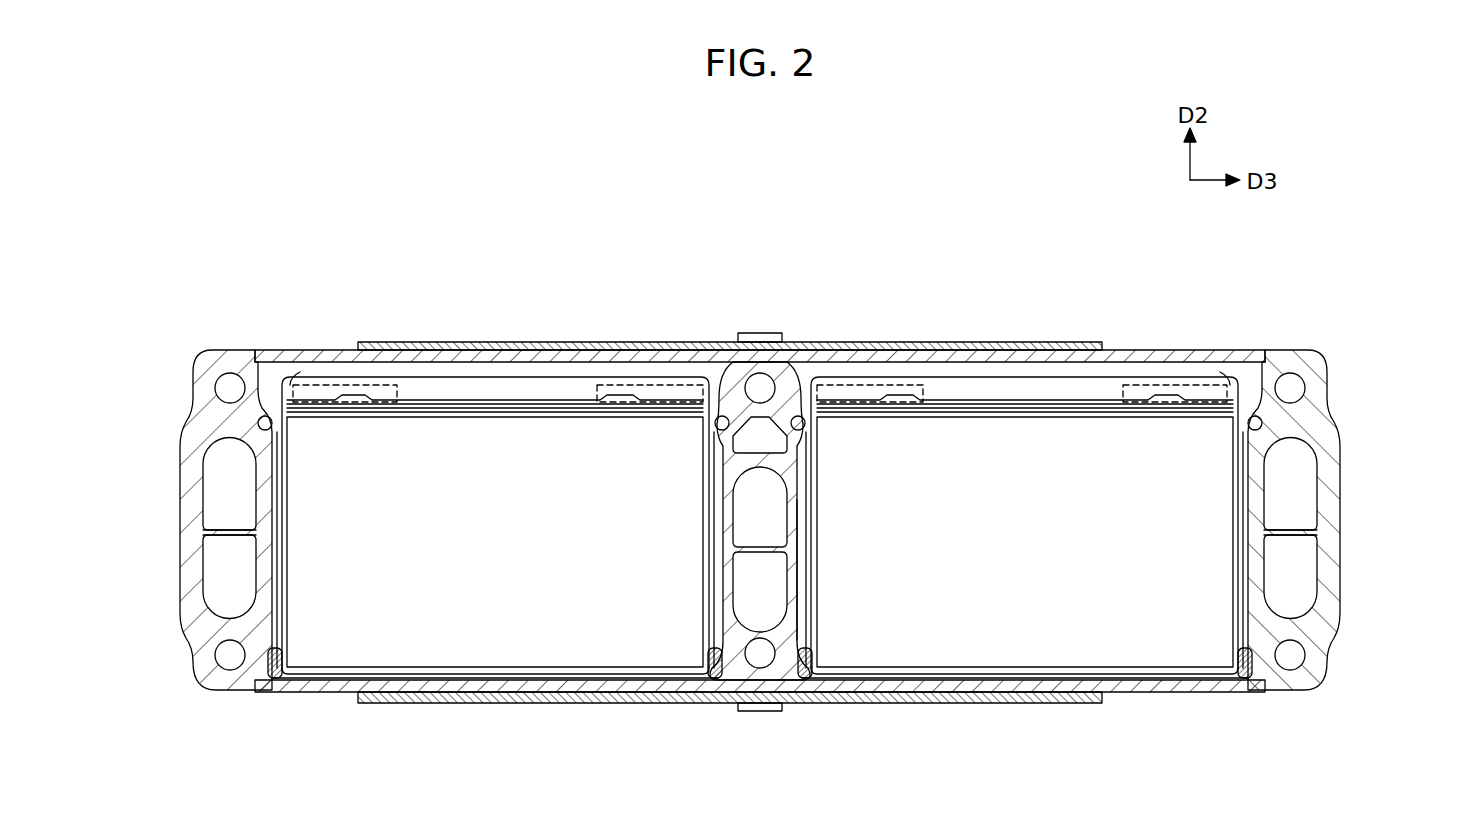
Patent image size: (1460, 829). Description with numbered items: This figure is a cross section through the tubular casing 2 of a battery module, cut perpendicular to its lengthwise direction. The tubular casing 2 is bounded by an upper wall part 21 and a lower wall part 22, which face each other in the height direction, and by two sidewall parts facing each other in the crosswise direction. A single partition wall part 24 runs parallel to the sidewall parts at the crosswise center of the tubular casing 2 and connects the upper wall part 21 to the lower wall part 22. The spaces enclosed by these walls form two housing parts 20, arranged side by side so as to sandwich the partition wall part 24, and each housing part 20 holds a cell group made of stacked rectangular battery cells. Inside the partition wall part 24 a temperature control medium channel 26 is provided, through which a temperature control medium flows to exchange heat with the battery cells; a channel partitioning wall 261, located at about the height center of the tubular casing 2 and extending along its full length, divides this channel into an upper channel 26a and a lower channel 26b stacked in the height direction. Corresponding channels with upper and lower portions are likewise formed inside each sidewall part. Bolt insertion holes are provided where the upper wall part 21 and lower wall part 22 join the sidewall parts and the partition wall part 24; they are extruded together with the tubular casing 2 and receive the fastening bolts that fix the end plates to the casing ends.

The tubular casing 2 is at (828, 248).
The housing part 20 is at (760, 524).
The upper wall part 21 is at (995, 342).
The lower wall part 22 is at (990, 703).
The partition wall part 24 is at (710, 650).
The temperature control medium channel 26 is at (739, 524).
The upper channel 26a is at (752, 512).
The lower channel 26b is at (752, 578).
The channel partitioning wall 261 is at (802, 512).